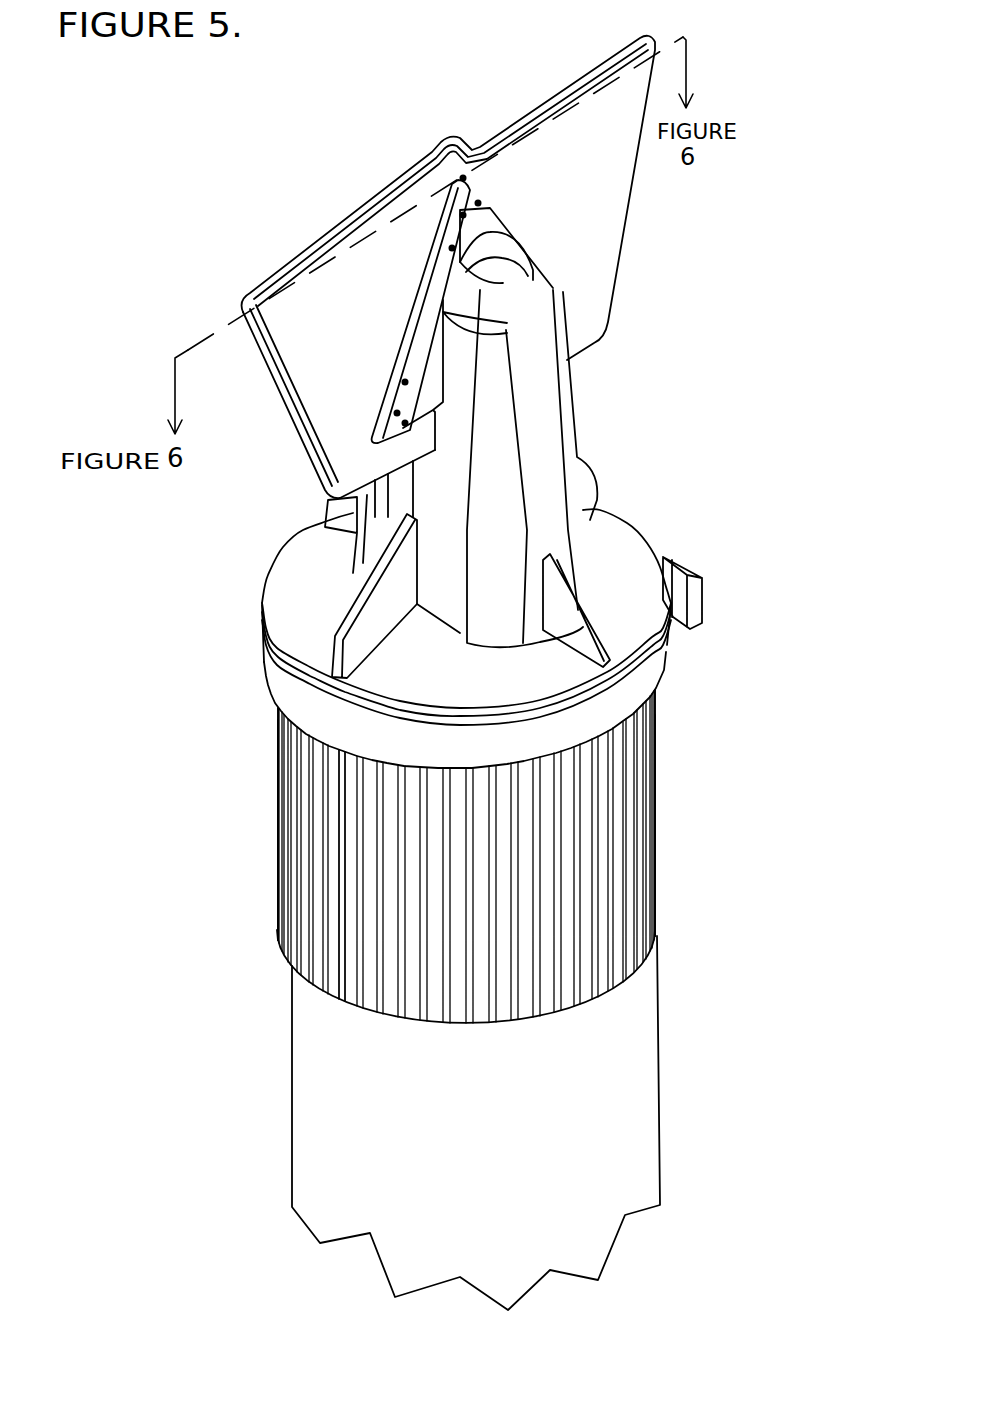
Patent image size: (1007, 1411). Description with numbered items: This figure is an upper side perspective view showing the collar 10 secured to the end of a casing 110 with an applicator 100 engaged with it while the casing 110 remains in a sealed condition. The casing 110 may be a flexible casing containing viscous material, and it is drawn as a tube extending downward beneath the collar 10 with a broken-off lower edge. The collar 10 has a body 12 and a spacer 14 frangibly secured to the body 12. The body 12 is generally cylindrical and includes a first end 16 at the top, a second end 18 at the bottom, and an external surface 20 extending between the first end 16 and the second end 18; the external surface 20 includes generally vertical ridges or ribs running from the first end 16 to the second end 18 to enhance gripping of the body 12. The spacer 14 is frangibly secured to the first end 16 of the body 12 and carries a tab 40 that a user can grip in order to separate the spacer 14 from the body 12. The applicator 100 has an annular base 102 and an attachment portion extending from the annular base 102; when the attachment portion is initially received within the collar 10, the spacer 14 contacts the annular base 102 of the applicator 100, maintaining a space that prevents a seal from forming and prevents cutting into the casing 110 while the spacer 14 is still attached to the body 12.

The applicator 100 is at (705, 281).
The annular base 102 is at (615, 563).
The tab 40 is at (704, 598).
The collar 10 is at (197, 741).
The spacer 14 is at (643, 695).
The first end 16 is at (575, 750).
The body 12 is at (682, 877).
The external surface 20 is at (310, 847).
The second end 18 is at (580, 1010).
The casing 110 is at (522, 1146).